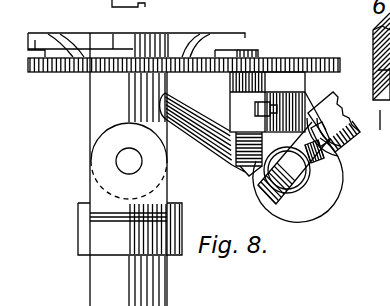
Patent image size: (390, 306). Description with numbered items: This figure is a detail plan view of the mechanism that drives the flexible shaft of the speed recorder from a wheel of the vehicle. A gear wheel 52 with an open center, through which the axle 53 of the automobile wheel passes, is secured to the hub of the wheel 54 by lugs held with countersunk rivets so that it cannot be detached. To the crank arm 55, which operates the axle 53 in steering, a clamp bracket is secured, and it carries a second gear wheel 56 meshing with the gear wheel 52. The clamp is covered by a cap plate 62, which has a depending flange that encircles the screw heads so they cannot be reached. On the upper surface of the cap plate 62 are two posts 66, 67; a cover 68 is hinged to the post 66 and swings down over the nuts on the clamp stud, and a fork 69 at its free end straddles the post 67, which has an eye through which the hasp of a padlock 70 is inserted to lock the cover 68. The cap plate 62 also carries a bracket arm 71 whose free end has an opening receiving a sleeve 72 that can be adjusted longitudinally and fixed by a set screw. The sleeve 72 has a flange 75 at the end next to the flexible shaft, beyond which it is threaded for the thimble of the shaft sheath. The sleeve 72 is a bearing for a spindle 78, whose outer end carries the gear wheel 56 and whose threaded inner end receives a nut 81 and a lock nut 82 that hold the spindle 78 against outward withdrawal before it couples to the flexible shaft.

The gear wheel 52 is at (70, 72).
The axle 53 is at (92, 107).
The wheel 54 is at (228, 33).
The crank arm 55 is at (228, 148).
The gear wheel 56 is at (184, 53).
The cap plate 62 is at (298, 180).
The post 66 is at (262, 200).
The post 67 is at (312, 162).
The cover 68 is at (287, 170).
The fork 69 is at (337, 157).
The padlock 70 is at (338, 105).
The bracket arm 71 is at (310, 88).
The sleeve 72 is at (234, 133).
The flange 75 is at (263, 146).
The spindle 78 is at (243, 173).
The nut 81 is at (232, 163).
The lock nut 82 is at (236, 170).